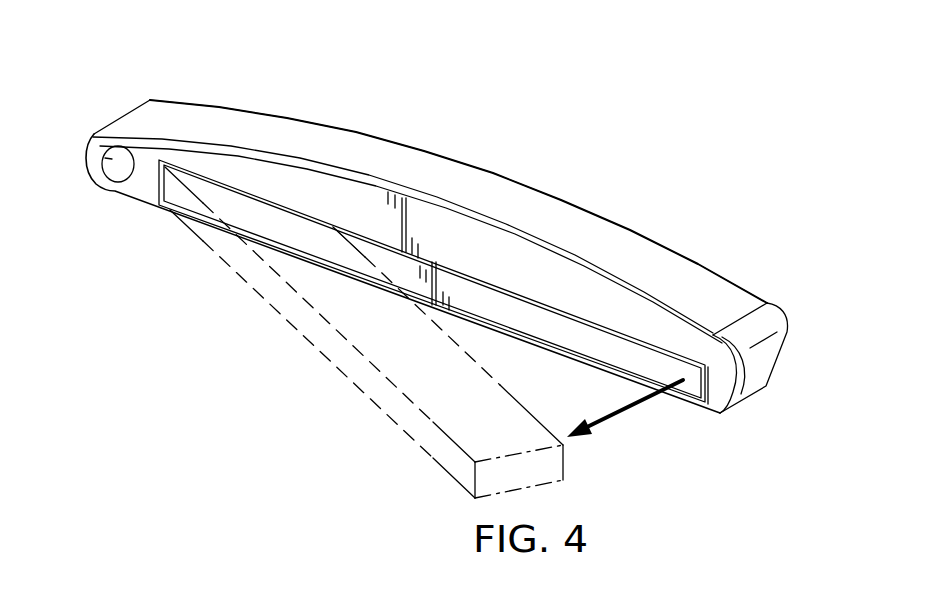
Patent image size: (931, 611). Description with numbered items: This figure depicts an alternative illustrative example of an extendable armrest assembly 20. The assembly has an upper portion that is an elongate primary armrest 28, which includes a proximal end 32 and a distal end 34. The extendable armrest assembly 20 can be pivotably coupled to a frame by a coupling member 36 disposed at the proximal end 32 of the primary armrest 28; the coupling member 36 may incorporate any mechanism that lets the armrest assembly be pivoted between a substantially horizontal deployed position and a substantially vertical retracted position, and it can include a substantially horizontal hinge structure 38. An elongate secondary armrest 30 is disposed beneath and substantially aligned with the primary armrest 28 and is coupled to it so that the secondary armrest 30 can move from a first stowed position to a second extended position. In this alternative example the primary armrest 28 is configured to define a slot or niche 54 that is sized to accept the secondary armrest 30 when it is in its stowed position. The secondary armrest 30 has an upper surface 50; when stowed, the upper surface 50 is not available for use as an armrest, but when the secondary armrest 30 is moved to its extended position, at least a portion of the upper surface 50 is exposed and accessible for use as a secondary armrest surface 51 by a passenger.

The extendable armrest assembly 20 is at (551, 133).
The elongate primary armrest 28 is at (382, 138).
The elongate secondary armrest 30 is at (252, 288).
The proximal end 32 is at (179, 85).
The distal end 34 is at (790, 291).
The coupling member 36 is at (93, 147).
The hinge structure 38 is at (110, 160).
The upper surface 50 is at (418, 395).
The secondary armrest surface 51 is at (353, 332).
The slot or niche 54 is at (598, 327).